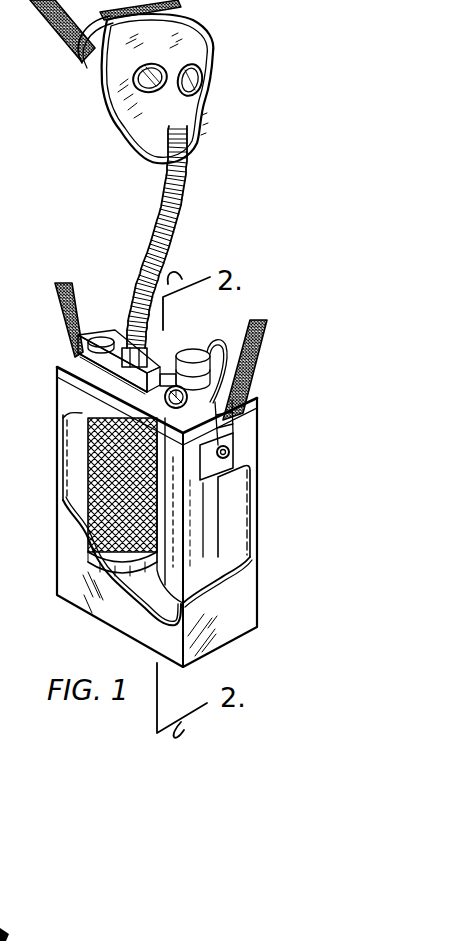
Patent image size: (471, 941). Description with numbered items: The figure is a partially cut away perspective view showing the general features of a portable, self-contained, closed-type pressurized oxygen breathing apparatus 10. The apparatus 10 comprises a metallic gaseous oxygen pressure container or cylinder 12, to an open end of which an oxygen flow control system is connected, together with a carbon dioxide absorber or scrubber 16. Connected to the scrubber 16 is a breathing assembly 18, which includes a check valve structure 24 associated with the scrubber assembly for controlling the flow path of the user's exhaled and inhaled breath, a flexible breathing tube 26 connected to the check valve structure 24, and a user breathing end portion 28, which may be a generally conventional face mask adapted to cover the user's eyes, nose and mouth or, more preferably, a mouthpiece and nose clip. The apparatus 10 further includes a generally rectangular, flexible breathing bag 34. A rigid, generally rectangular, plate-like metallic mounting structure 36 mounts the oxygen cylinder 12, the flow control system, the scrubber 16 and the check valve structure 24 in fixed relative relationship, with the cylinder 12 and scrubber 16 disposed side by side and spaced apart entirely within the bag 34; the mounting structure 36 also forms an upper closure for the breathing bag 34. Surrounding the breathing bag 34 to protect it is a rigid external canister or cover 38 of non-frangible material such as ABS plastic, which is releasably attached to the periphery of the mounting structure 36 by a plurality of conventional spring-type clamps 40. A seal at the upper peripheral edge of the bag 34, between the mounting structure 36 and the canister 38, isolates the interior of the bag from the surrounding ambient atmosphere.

The pressurized oxygen breathing apparatus 10 is at (258, 243).
The oxygen cylinder 12 is at (212, 510).
The carbon dioxide scrubber 16 is at (90, 497).
The breathing assembly 18 is at (75, 262).
The check valve structure 24 is at (62, 353).
The flexible breathing tube 26 is at (158, 220).
The user breathing end portion 28 is at (102, 117).
The breathing bag 34 is at (70, 452).
The mounting structure 36 is at (92, 374).
The external canister 38 is at (243, 603).
The spring-type clamps 40 is at (235, 442).